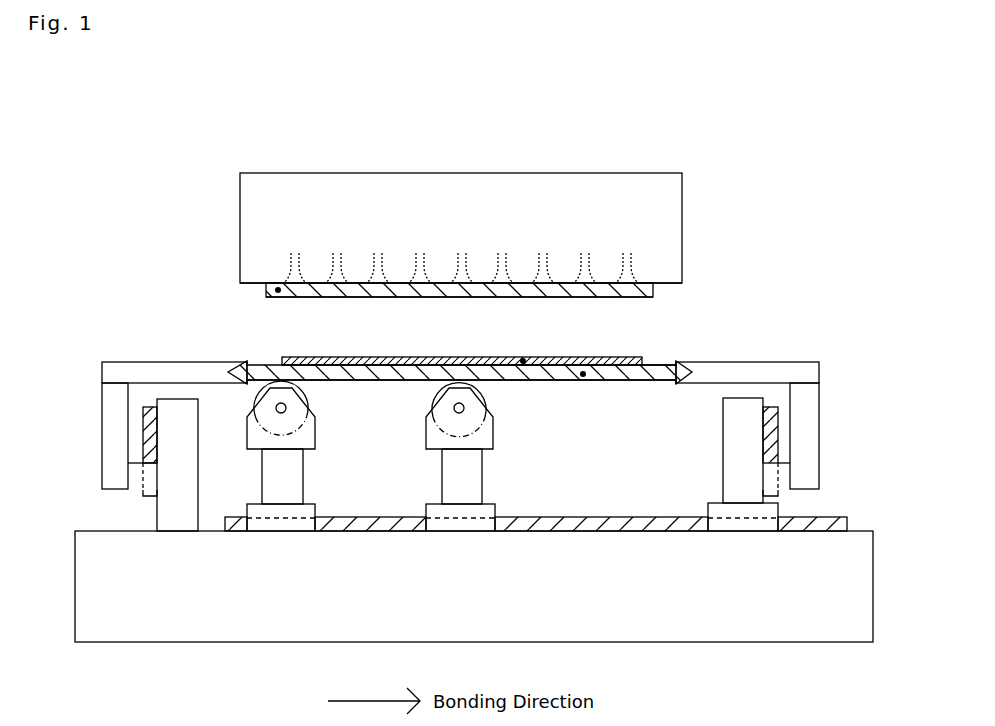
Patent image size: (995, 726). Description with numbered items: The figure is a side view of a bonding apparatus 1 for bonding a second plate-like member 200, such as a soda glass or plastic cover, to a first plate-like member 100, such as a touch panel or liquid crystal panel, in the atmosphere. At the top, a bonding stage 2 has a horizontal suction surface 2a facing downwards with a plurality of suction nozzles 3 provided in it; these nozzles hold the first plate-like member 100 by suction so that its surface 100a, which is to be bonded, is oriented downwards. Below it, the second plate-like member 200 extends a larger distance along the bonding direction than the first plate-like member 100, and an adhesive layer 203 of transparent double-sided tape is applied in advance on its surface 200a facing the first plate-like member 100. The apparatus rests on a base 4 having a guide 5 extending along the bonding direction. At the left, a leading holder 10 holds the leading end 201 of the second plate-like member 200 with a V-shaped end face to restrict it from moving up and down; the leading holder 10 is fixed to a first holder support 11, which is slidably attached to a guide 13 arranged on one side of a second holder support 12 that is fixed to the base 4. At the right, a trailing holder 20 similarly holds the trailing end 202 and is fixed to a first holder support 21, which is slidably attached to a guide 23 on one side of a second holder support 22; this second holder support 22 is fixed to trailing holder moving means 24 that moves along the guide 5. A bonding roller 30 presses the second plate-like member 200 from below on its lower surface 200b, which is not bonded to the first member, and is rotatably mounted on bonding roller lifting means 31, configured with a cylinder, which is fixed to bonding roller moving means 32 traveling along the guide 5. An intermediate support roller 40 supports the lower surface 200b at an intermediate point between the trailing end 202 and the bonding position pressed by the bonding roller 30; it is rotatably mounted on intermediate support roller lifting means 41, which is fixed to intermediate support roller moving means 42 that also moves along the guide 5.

The bonding apparatus 1 is at (146, 179).
The bonding stage 2 is at (680, 230).
The suction surface 2a is at (667, 290).
The suction nozzles 3 is at (375, 253).
The base 4 is at (182, 635).
The guide 5 is at (568, 516).
The leading holder 10 is at (160, 364).
The first holder support 11 is at (113, 422).
The second holder support 12 is at (165, 522).
The guide 13 is at (145, 447).
The trailing holder 20 is at (765, 365).
The first holder support 21 is at (803, 422).
The second holder support 22 is at (730, 473).
The guide 23 is at (775, 447).
The trailing holder moving means 24 is at (777, 512).
The bonding roller 30 is at (303, 393).
The bonding roller lifting means 31 is at (292, 470).
The bonding roller moving means 32 is at (313, 507).
The intermediate support roller 40 is at (485, 393).
The intermediate support roller lifting means 41 is at (472, 470).
The intermediate support roller moving means 42 is at (492, 507).
The first plate-like member 100 is at (276, 291).
The surface 100a is at (405, 297).
The second plate-like member 200 is at (583, 377).
The surface 200a is at (655, 363).
The lower surface 200b is at (555, 382).
The leading end 201 is at (269, 360).
The trailing end 202 is at (648, 385).
The adhesive layer 203 is at (523, 358).